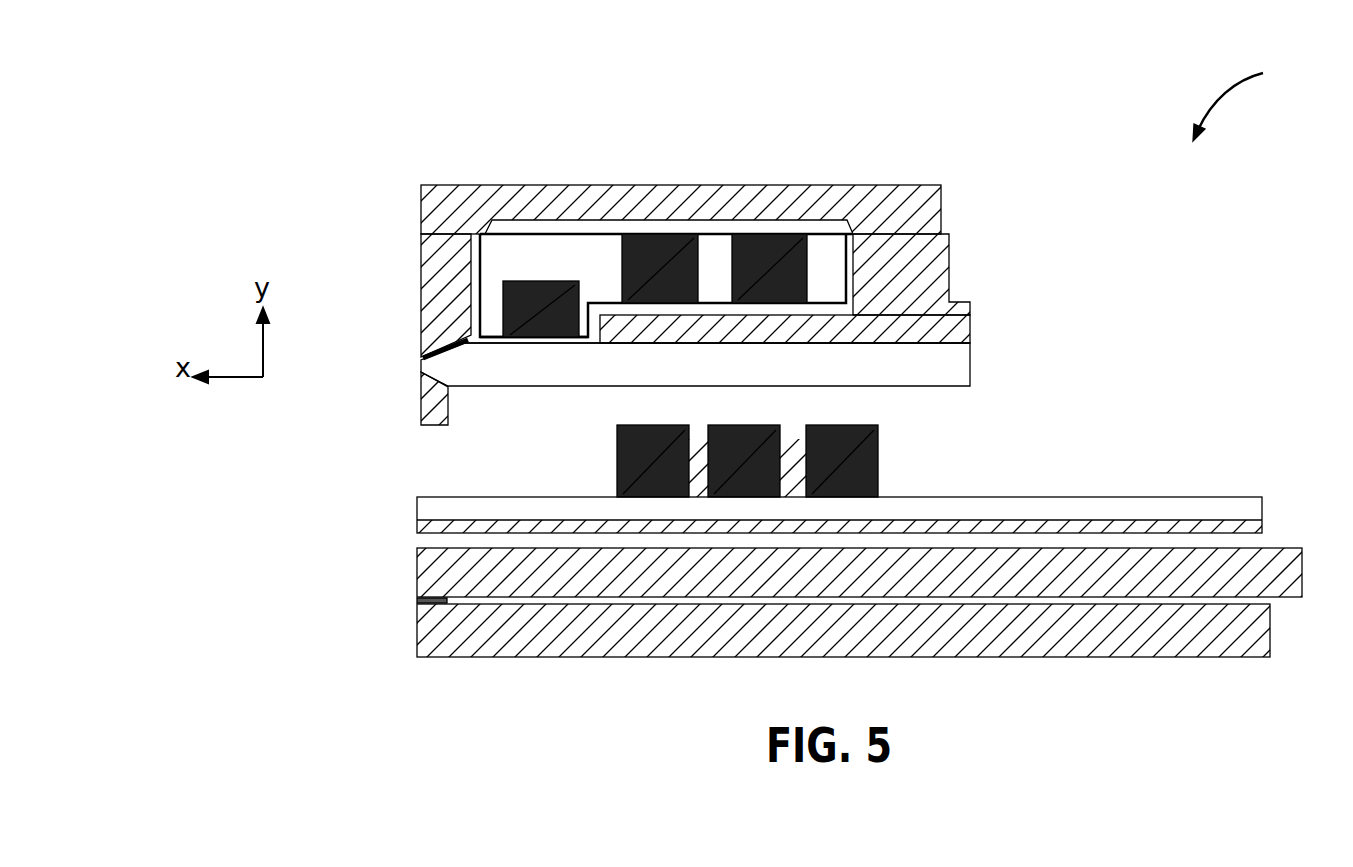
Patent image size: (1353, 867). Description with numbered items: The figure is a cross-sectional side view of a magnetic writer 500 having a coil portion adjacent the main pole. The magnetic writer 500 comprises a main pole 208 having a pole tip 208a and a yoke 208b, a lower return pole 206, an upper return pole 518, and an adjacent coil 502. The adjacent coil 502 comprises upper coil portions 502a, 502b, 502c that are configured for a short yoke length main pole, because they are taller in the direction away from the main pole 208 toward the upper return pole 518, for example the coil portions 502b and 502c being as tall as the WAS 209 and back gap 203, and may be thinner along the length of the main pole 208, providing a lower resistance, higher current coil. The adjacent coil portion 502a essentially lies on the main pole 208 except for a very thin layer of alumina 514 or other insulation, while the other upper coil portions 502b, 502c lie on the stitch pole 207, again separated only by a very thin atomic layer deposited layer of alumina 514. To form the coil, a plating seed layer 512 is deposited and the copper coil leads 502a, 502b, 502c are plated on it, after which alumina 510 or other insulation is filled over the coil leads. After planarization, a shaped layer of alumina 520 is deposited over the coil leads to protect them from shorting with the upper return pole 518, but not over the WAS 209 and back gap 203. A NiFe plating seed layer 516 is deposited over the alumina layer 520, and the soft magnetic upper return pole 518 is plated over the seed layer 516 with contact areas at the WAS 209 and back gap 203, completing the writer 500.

The magnetic writer 500 is at (1250, 98).
The back gap 203 is at (925, 250).
The lower return pole 206 is at (1262, 528).
The stitch pole 207 is at (970, 325).
The main pole 208 is at (970, 368).
The pole tip 208a is at (421, 368).
The yoke 208b is at (607, 358).
The WAS 209 is at (438, 302).
The adjacent coil 502 is at (990, 233).
The adjacent coil portion 502a is at (542, 292).
The upper coil portion 502b is at (660, 258).
The upper coil portion 502c is at (767, 248).
The alumina 510 is at (503, 257).
The plating seed layer 512 is at (547, 339).
The alumina 514 is at (508, 342).
The NiFe plating seed layer 516 is at (598, 220).
The upper return pole 518 is at (843, 202).
The alumina 520 is at (805, 227).